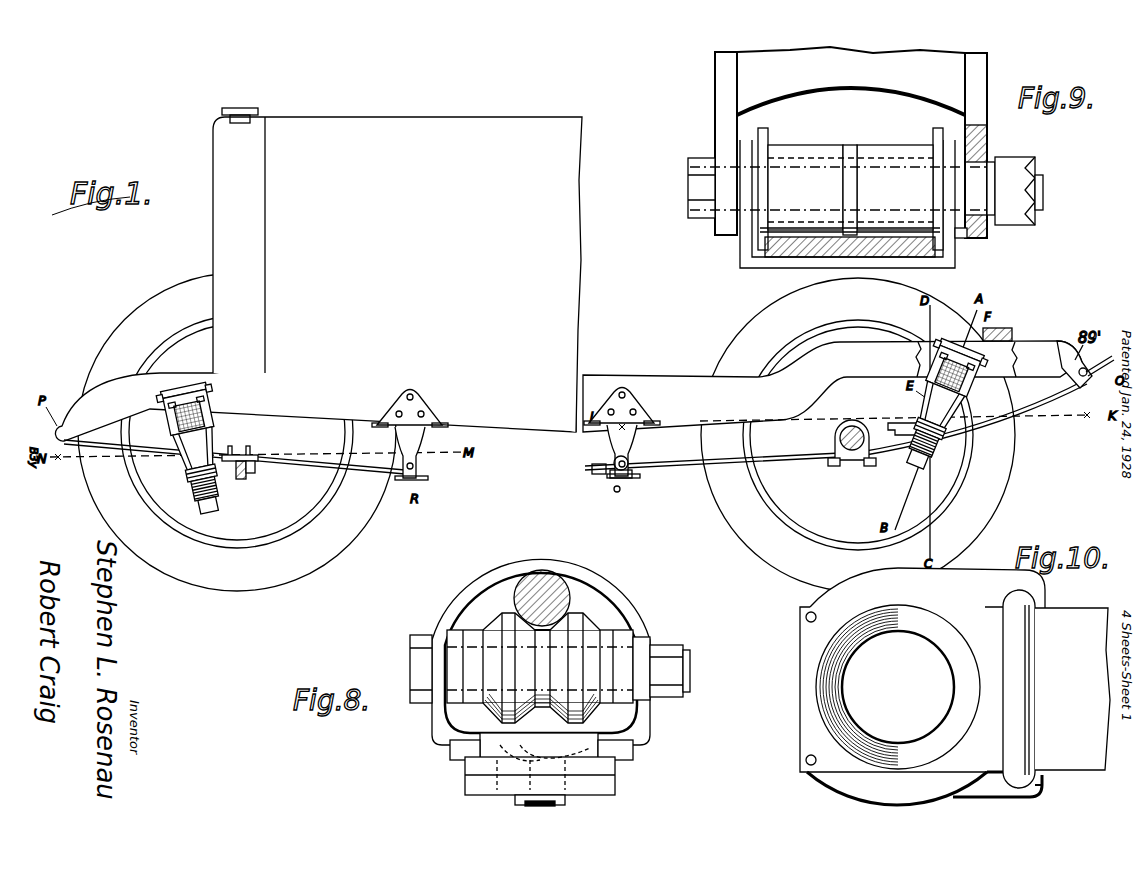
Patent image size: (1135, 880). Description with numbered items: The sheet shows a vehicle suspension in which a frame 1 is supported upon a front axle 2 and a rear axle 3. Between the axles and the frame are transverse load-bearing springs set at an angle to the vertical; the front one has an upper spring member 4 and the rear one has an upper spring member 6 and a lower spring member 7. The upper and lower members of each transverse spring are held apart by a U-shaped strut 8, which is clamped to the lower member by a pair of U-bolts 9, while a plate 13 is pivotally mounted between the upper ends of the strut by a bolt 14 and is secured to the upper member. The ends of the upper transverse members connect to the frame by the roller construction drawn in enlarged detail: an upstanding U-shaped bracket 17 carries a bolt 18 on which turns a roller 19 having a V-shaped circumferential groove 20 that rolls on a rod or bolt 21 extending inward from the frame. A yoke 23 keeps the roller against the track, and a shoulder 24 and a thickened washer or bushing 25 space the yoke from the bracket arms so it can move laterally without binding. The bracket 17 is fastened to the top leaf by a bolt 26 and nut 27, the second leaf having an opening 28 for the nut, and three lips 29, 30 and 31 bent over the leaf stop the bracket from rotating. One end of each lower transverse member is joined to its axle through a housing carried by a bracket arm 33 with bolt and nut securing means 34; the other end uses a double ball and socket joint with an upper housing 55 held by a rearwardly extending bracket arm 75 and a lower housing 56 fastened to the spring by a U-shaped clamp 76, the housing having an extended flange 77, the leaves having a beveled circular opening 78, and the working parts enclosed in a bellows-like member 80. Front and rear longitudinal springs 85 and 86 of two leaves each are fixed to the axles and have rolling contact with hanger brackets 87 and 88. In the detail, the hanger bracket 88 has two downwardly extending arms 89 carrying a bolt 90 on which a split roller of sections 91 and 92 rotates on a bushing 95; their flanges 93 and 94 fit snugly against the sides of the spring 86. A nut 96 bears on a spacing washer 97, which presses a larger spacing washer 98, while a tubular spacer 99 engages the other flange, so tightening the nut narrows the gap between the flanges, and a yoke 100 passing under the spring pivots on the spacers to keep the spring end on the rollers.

In FIG. 1, the frame 1 is at (556, 383).
In FIG. 1, the front axle 2 is at (253, 473).
In FIG. 1, the rear axle 3 is at (852, 462).
In FIG. 1, the upper spring member 4 is at (185, 420).
In FIG. 1, the upper spring member 6 is at (968, 378).
In FIG. 10, the lower spring member 7 is at (1082, 612).
In FIG. 1, the strut 8 is at (204, 440).
In FIG. 1, the U-bolts 9 is at (616, 494).
In FIG. 1, the plate 13 is at (192, 396).
In FIG. 1, the bolt 14 is at (1000, 345).
In FIG. 8, the U-shaped bracket 17 is at (625, 725).
In FIG. 8, the bolt 18 is at (690, 665).
In FIG. 8, the roller 19 is at (500, 688).
In FIG. 8, the V-shaped circumferential groove 20 is at (548, 638).
In FIG. 8, the rod or bolt 21 is at (560, 592).
In FIG. 8, the yoke 23 is at (528, 565).
In FIG. 8, the shoulder 24 is at (436, 645).
In FIG. 8, the thickened washer or bushing 25 is at (650, 645).
In FIG. 8, the bolt 26 is at (500, 762).
In FIG. 8, the nut 27 is at (560, 803).
In FIG. 8, the opening 28 is at (575, 780).
In FIG. 8, the lip 29 is at (615, 762).
In FIG. 8, the lip 30 is at (598, 748).
In FIG. 8, the lip 31 is at (450, 752).
In FIG. 1, the bracket arm 33 is at (240, 480).
In FIG. 1, the bolt and nut securing means 34 is at (256, 468).
In FIG. 1, the upper cylindrical housing 55 is at (200, 475).
In FIG. 1, the lower cylindrical housing 56 is at (210, 508).
In FIG. 1, the bracket arm 75 is at (895, 423).
In FIG. 10, the U-shaped clamp 76 is at (1018, 694).
In FIG. 10, the flange 77 is at (1044, 790).
In FIG. 10, the beveled circular opening 78 is at (828, 695).
In FIG. 1, the bellows-like member 80 is at (205, 493).
In FIG. 1, the front longitudinal spring 85 is at (372, 474).
In FIG. 1, the rear longitudinal spring 86 is at (790, 460).
In FIG. 9, the rear longitudinal spring 86 is at (800, 250).
In FIG. 1, the hanger bracket 87 is at (428, 413).
In FIG. 1, the hanger bracket 88 is at (614, 432).
In FIG. 9, the hanger bracket 88 is at (745, 77).
In FIG. 1, the downwardly extending arms 89 is at (630, 458).
In FIG. 9, the downwardly extending arms 89 is at (715, 125).
In FIG. 9, the bolt 90 is at (775, 188).
In FIG. 9, the roller section 91 is at (798, 148).
In FIG. 9, the roller section 92 is at (890, 148).
In FIG. 9, the flange 93 is at (763, 128).
In FIG. 1, the flange 94 is at (630, 474).
In FIG. 9, the flange 94 is at (938, 128).
In FIG. 9, the bushing 95 is at (850, 160).
In FIG. 1, the nut 96 is at (604, 465).
In FIG. 9, the nut 96 is at (1040, 192).
In FIG. 9, the spacing washer 97 is at (1018, 212).
In FIG. 9, the spacing washer 98 is at (960, 240).
In FIG. 9, the tubular washer or spacer 99 is at (740, 240).
In FIG. 9, the yoke 100 is at (905, 264).